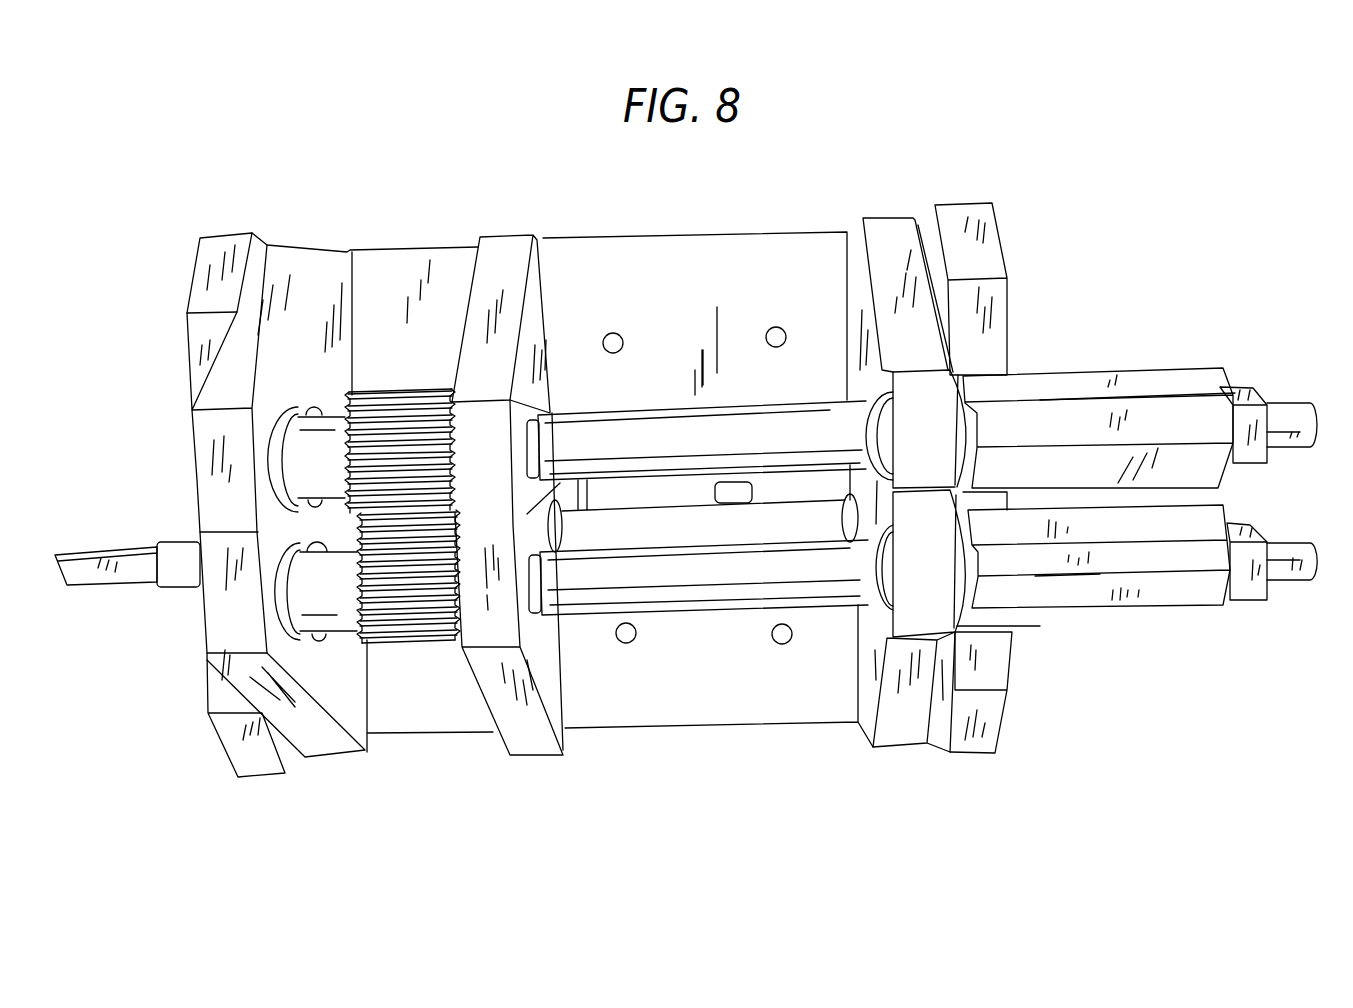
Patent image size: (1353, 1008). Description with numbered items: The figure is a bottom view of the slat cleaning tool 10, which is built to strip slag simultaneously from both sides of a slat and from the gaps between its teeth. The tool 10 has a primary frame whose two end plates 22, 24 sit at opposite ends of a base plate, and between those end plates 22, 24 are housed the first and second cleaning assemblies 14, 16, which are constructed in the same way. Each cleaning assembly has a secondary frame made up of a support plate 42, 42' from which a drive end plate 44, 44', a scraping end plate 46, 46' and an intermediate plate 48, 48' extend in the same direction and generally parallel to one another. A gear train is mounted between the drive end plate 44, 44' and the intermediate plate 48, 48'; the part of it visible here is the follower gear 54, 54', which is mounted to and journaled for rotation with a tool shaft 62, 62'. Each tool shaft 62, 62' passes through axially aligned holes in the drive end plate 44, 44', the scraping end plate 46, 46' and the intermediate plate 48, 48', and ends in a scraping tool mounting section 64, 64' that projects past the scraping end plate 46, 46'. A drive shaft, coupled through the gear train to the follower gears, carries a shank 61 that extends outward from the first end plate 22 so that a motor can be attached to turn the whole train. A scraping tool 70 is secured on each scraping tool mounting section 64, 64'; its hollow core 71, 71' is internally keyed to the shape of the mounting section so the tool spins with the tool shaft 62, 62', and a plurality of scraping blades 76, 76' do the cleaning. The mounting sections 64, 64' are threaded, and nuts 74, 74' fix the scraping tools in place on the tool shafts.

The tool 10 is at (228, 208).
The first cleaning assembly 14 is at (997, 762).
The second cleaning assembly 16 is at (1027, 258).
The end plate 22 is at (213, 287).
The end plate 24 is at (973, 212).
The support plate 42 is at (710, 650).
The support plate 42' is at (695, 289).
The drive end plate 44 is at (346, 689).
The drive end plate 44' is at (335, 338).
The scraping end plate 46 is at (904, 655).
The scraping end plate 46' is at (867, 334).
The intermediate plate 48 is at (509, 623).
The intermediate plate 48' is at (507, 281).
The follower gear 54 is at (414, 649).
The follower gear 54' is at (400, 340).
The shank 61 is at (135, 563).
The tool shaft 62 is at (698, 612).
The tool shaft 62' is at (696, 381).
The scraping tool mounting section 64 is at (1298, 526).
The scraping tool mounting section 64' is at (1296, 384).
The scraping tool 70 is at (1067, 638).
The hollow core 71 is at (1088, 624).
The hollow core 71' is at (1137, 347).
The nut 74 is at (1260, 604).
The nut 74' is at (1244, 375).
The scraping blades 76 is at (1099, 604).
The scraping blades 76' is at (1098, 381).